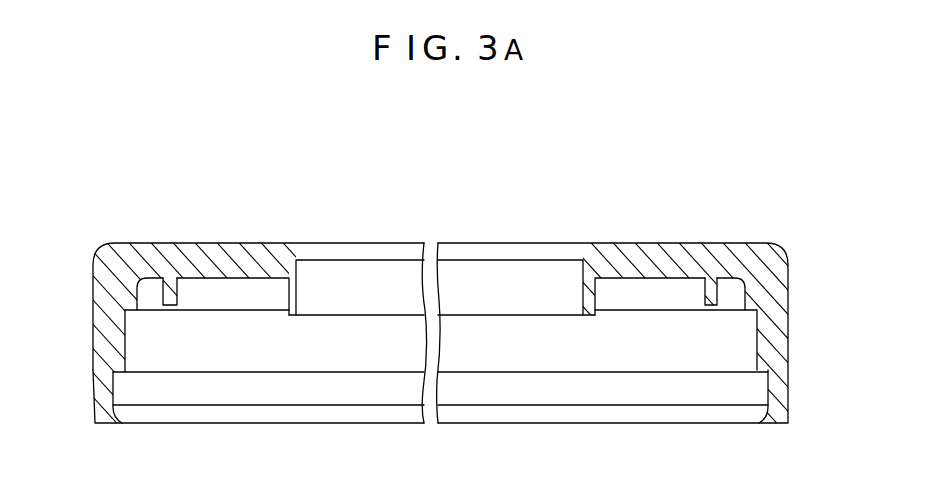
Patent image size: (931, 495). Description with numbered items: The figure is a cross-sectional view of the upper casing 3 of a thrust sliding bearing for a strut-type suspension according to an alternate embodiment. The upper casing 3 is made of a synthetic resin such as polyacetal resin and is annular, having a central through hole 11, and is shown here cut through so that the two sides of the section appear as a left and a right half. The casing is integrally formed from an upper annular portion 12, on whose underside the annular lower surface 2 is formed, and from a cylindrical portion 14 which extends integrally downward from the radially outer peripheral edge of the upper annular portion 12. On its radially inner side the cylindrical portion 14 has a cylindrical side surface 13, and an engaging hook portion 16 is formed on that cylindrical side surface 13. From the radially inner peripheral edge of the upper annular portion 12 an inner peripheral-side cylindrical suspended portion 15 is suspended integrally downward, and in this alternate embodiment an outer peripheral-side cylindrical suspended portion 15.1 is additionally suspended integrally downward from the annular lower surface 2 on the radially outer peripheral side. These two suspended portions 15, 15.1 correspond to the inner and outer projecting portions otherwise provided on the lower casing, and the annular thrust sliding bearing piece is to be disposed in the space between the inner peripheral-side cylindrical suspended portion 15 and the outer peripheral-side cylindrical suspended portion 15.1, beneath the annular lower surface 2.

The upper casing 3 is at (75, 291).
The annular lower surface 2 is at (198, 284).
The through hole 11 is at (401, 250).
The upper annular portion 12 is at (668, 252).
The cylindrical side surface 13 is at (748, 341).
The cylindrical portion 14 is at (110, 348).
The inner peripheral-side cylindrical suspended portion 15 is at (291, 296).
The outer peripheral-side cylindrical suspended portion 15.1 is at (170, 296).
The engaging hook portion 16 is at (353, 417).